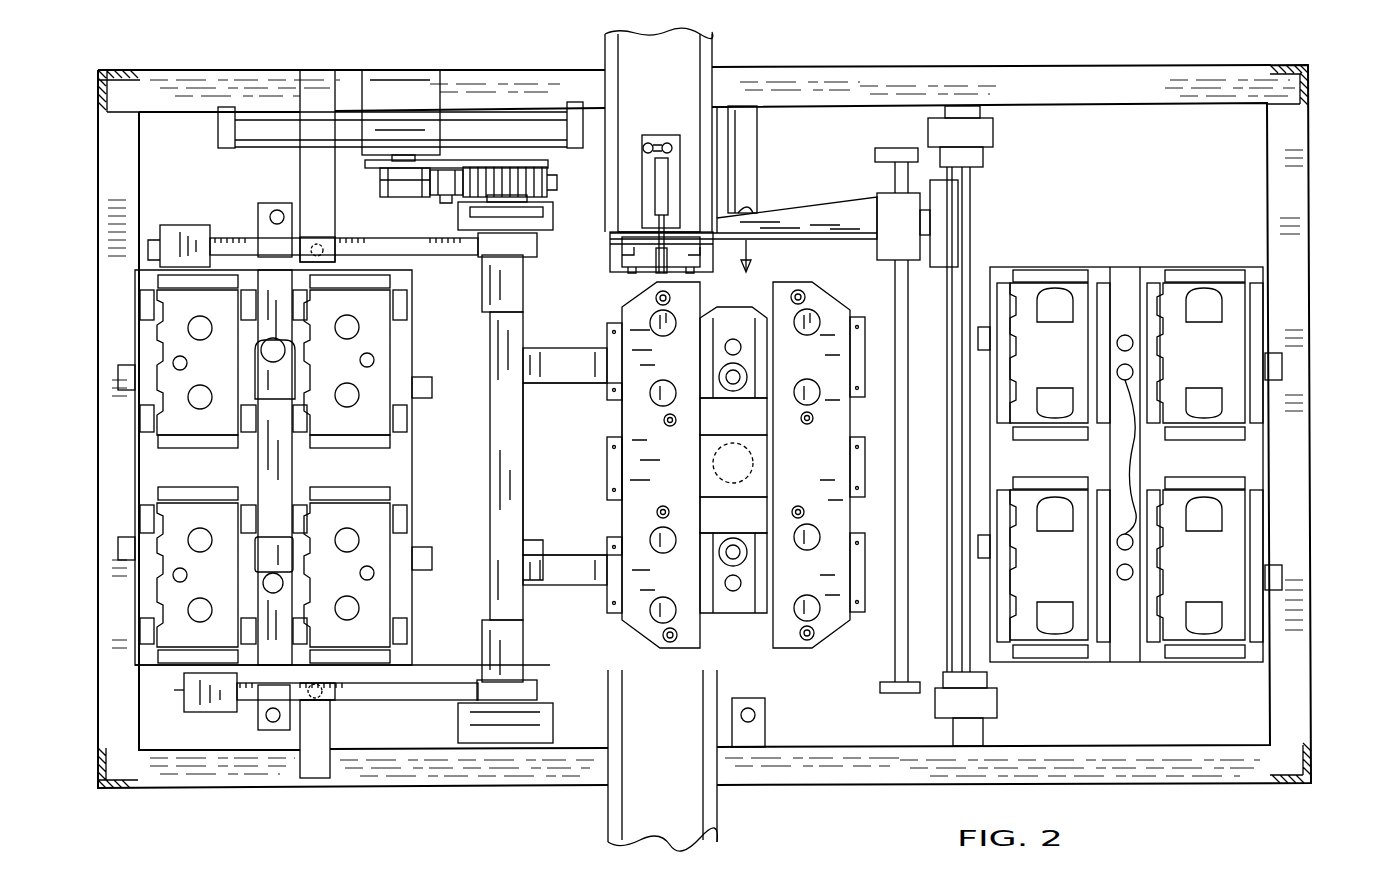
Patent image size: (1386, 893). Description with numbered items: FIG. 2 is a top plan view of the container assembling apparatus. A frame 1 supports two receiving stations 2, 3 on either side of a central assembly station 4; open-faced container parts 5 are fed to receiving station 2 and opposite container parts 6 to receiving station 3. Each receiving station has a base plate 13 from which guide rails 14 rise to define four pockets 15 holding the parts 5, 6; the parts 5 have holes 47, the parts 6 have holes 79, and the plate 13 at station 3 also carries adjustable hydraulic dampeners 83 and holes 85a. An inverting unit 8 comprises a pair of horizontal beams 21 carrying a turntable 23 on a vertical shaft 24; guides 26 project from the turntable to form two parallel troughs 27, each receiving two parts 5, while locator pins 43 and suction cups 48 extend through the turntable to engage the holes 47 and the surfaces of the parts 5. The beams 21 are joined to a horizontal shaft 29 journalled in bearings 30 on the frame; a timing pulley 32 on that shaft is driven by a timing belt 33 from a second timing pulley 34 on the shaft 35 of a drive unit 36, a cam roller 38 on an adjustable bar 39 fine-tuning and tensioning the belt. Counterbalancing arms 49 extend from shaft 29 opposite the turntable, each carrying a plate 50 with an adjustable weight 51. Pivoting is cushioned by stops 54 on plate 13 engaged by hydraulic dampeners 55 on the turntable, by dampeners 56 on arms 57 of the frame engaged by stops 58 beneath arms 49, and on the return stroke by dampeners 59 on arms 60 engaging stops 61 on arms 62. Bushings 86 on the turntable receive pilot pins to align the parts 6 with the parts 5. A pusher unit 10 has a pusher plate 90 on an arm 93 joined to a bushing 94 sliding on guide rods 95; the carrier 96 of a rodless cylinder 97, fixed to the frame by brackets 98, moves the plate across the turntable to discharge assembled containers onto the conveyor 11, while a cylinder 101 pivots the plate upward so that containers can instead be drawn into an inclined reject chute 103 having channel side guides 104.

The frame 1 is at (1165, 62).
The receiving station 2 is at (107, 686).
The receiving station 3 is at (1262, 680).
The assembly station 4 is at (810, 665).
The container parts 5 is at (160, 330).
The container parts 6 is at (1082, 275).
The inverting unit 8 is at (585, 589).
The pusher unit 10 is at (748, 212).
The conveyor 11 is at (605, 808).
The base plate 13 is at (410, 472).
The guide rails 14 is at (392, 300).
The pockets 15 is at (135, 302).
The horizontal beams 21 is at (565, 355).
The turntable 23 is at (620, 412).
The vertical shaft 24 is at (770, 450).
The guides 26 is at (607, 470).
The receiving troughs 27 is at (745, 295).
The horizontal shaft 29 is at (496, 440).
The bearings 30 is at (555, 215).
The timing pulley 32 is at (545, 168).
The timing belt 33 is at (495, 167).
The second timing pulley 34 is at (380, 178).
The shaft 35 is at (405, 155).
The drive unit 36 is at (432, 80).
The cam roller 38 is at (450, 170).
The bar 39 is at (360, 158).
The locator pins 43 is at (663, 337).
The holes 47 is at (218, 312).
The suction cups 48 is at (655, 297).
The arms 49 is at (235, 240).
The plate 50 is at (205, 225).
The weight 51 is at (165, 228).
The stops 54 is at (265, 348).
The hydraulic dampeners 55 is at (741, 349).
The hydraulic dampeners 56 is at (325, 240).
The arms 57 is at (320, 70).
The stops 58 is at (330, 244).
The hydraulic dampeners 59 is at (275, 210).
The arms 60 is at (288, 233).
The stops 61 is at (742, 210).
The arms 62 is at (745, 135).
The holes 79 is at (1055, 320).
The hydraulic dampeners 83 is at (1125, 335).
The holes 85a is at (1136, 458).
The bushings 86 is at (719, 377).
The pusher plate 90 is at (618, 262).
The arm 93 is at (755, 262).
The bushing 94 is at (887, 207).
The horizontal guide rods 95 is at (898, 300).
The carrier 96 is at (945, 187).
The rodless cylinder 97 is at (955, 375).
The brackets 98 is at (965, 115).
The cylinder 101 is at (650, 148).
The inclined chute 103 is at (672, 78).
The channel side guides 104 is at (610, 60).